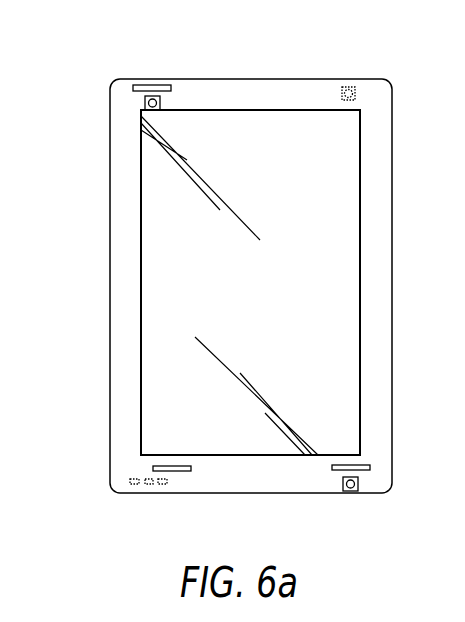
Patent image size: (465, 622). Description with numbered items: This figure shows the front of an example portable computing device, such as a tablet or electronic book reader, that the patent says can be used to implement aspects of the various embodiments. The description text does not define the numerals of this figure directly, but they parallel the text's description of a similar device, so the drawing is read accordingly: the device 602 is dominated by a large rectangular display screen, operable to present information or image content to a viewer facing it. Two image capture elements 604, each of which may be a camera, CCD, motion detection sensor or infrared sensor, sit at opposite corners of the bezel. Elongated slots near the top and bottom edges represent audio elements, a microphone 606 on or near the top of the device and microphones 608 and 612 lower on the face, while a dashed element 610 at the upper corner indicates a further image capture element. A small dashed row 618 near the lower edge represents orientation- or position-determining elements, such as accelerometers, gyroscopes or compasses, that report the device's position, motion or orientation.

The tablet device / display 602 is at (141, 336).
The camera 604 is at (145, 103).
The speaker 606 is at (160, 85).
The speaker 608 is at (370, 467).
The sensor 610 is at (345, 87).
The speaker 612 is at (180, 471).
The buttons 618 is at (150, 484).